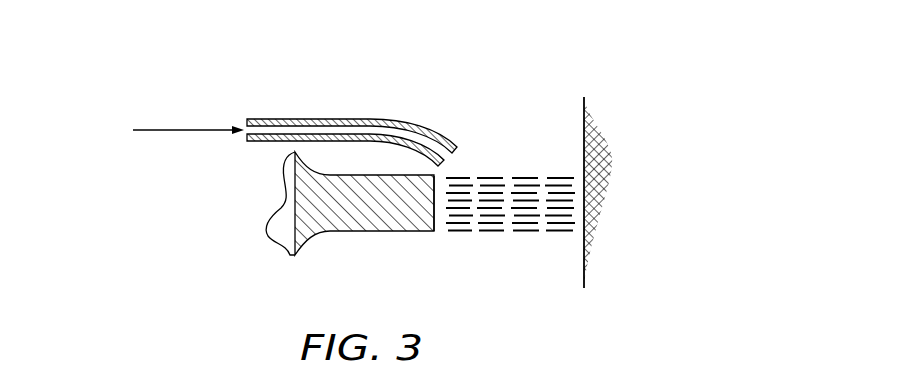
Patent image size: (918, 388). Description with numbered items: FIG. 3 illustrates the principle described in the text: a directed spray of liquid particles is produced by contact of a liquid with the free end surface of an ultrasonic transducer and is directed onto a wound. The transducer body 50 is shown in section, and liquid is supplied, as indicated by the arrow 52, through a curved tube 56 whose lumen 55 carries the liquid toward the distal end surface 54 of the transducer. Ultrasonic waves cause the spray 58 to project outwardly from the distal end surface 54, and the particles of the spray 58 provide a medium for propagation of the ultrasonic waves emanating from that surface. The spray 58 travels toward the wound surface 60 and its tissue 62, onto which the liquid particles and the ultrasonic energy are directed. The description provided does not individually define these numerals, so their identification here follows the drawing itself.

The nozzle body 50 is at (383, 207).
The liquid supply 52 is at (177, 128).
The nozzle tip edge 54 is at (437, 232).
The tube lumen 55 is at (317, 129).
The curved tube 56 is at (422, 124).
The liquid spray 58 is at (490, 178).
The wall surface 60 is at (584, 127).
The coating 62 is at (600, 150).